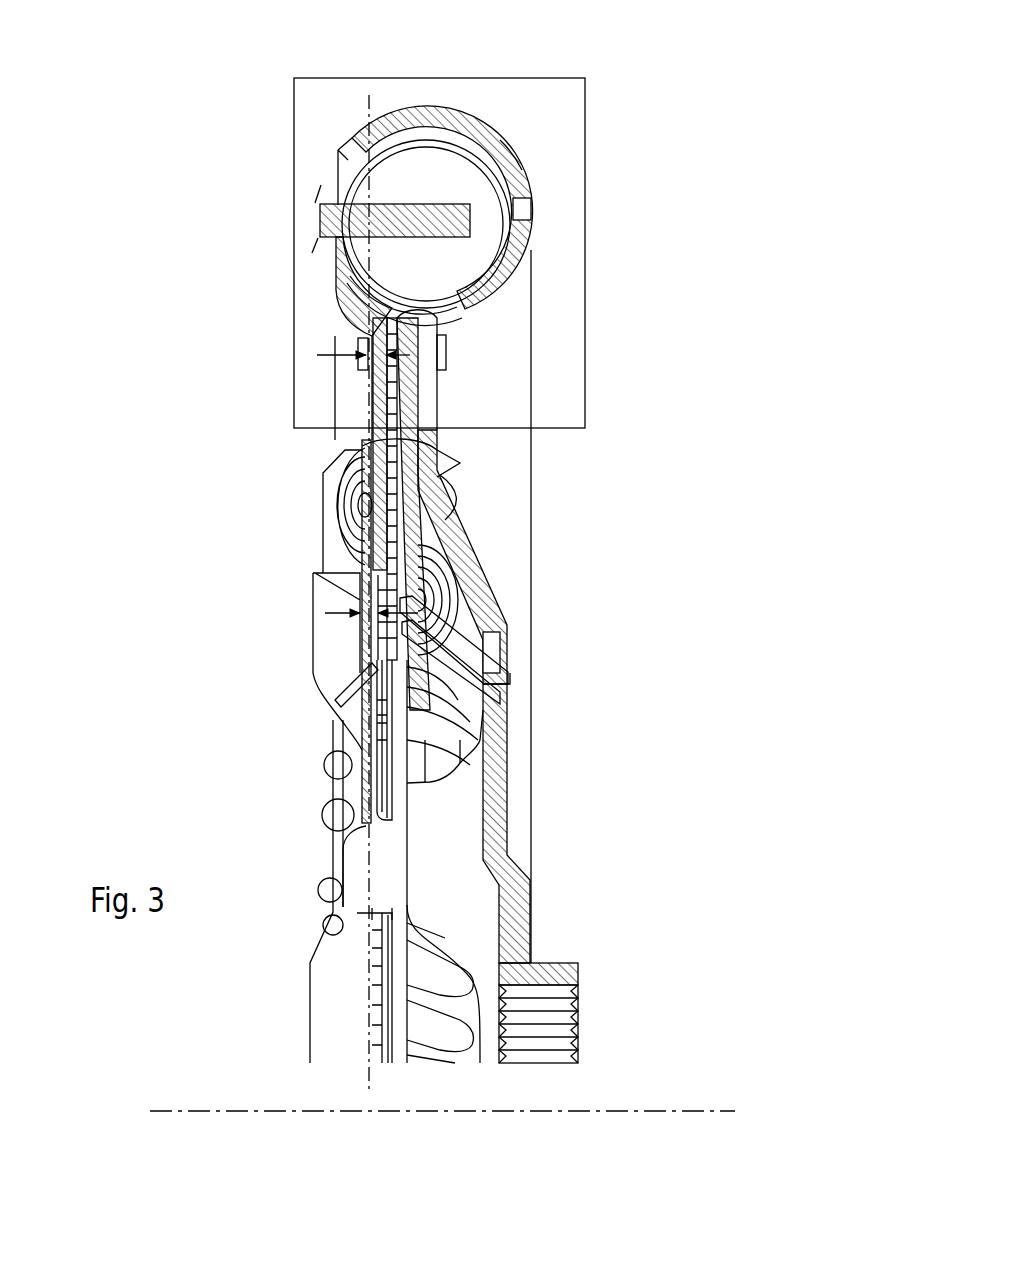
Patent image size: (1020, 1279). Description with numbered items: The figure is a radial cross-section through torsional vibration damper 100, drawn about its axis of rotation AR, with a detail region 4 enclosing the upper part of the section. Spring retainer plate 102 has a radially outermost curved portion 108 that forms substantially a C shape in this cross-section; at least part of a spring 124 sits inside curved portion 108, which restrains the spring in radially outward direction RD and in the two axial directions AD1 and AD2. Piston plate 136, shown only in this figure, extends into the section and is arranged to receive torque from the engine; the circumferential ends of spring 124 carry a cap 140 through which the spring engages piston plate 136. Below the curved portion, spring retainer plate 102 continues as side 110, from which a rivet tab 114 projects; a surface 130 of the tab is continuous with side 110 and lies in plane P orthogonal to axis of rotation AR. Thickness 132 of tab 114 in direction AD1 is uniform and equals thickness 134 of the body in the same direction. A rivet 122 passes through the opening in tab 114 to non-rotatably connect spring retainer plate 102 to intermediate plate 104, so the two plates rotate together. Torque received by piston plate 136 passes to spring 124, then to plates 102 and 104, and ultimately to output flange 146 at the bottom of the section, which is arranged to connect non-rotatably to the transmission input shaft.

The torsional vibration damper 100 is at (661, 53).
The detail view region 4 is at (586, 342).
The cap 140 is at (393, 176).
The spring retainer plate 102 is at (491, 124).
The radially outermost curved portion 108 is at (515, 155).
The piston plate 136 is at (335, 227).
The spring 124 is at (338, 283).
The surface 130 is at (355, 330).
The thickness of tabs 132 is at (330, 355).
The rivet tab 114 is at (408, 375).
The rivet 122 is at (447, 345).
The intermediate plate 104 is at (350, 458).
The side 110 is at (357, 541).
The thickness of body 134 is at (333, 620).
The output flange 146 is at (517, 922).
The plane P is at (367, 108).
The axial direction AD2 is at (673, 497).
The axial direction AD1 is at (673, 560).
The radially outward direction RD is at (741, 727).
The axis of rotation AR is at (712, 1108).